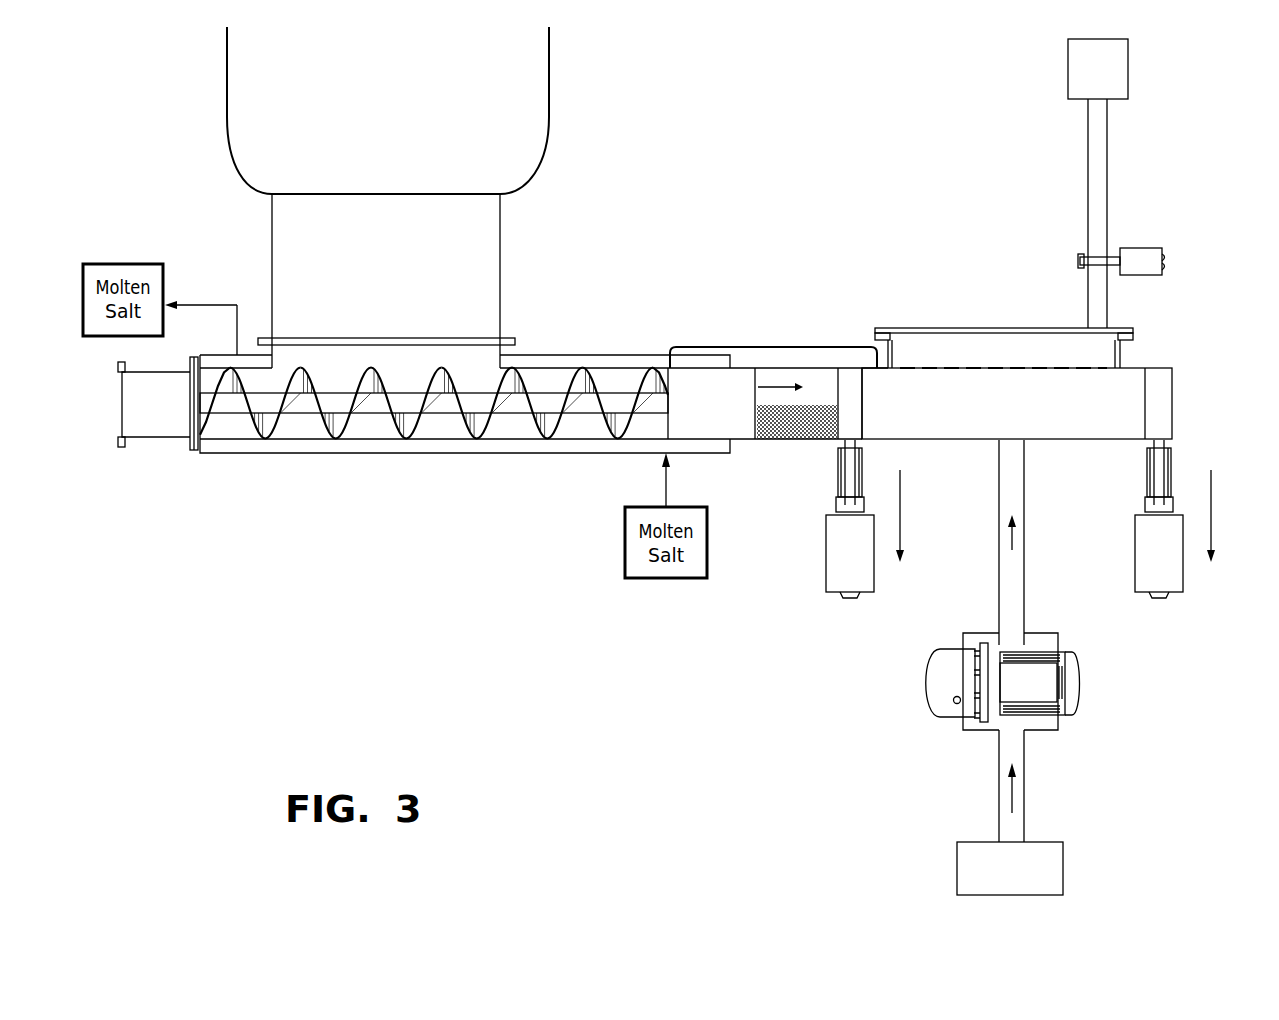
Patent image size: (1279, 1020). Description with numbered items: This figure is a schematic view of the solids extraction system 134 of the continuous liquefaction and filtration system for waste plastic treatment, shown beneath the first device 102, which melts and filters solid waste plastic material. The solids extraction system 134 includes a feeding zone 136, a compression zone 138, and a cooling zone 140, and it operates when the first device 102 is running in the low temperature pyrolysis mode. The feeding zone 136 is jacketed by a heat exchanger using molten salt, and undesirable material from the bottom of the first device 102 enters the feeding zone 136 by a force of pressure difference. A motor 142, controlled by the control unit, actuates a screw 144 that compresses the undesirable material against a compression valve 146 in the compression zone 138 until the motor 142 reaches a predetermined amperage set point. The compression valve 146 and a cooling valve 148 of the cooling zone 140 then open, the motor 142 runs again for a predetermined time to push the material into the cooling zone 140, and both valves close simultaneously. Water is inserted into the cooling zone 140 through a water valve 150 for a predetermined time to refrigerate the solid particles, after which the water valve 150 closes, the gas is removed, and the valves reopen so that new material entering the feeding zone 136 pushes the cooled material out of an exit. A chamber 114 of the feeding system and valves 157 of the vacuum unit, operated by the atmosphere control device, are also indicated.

The first device 102 is at (402, 129).
The chamber 114 is at (1116, 88).
The solids extraction system 134 is at (866, 205).
The feeding zone 136 is at (349, 310).
The compression zone 138 is at (777, 347).
The cooling zone 140 is at (980, 296).
The motor 142 is at (157, 436).
The screw 144 is at (258, 430).
The compression valve 146 is at (833, 553).
The cooling valve 148 is at (1172, 575).
The water valve 150 is at (1080, 683).
The valves 157 is at (1143, 248).